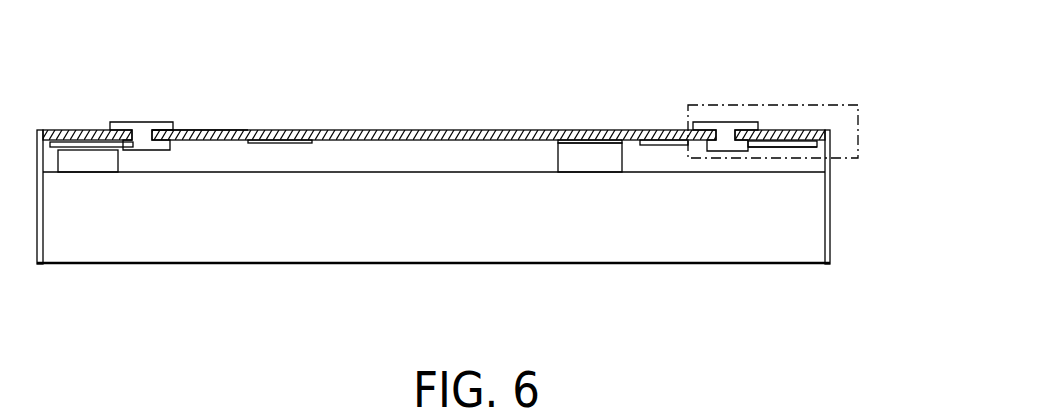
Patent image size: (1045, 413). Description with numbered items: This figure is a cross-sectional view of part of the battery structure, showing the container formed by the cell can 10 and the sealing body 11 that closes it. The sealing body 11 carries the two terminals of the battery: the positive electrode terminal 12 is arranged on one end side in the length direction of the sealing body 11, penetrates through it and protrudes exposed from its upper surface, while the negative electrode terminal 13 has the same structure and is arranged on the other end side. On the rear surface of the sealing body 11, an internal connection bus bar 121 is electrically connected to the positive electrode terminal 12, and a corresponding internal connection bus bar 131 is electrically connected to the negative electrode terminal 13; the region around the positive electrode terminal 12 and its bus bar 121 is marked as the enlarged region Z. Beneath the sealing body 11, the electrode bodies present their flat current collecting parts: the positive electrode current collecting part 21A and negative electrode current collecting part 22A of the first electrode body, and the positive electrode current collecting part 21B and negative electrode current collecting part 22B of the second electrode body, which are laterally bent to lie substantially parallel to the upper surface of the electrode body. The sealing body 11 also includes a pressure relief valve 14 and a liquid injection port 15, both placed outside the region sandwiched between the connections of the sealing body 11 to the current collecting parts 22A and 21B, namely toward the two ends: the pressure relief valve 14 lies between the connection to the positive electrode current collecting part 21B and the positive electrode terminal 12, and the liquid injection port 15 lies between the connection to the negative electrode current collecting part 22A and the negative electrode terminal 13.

The cell can 10 is at (830, 250).
The sealing body 11 is at (415, 130).
The positive electrode terminal 12 is at (725, 122).
The internal connection bus bar 121 is at (772, 141).
The negative electrode terminal 13 is at (143, 122).
The internal connection bus bar 131 is at (85, 142).
The pressure relief valve 14 is at (650, 130).
The liquid injection port 15 is at (197, 130).
The positive electrode current collecting part 21A is at (788, 150).
The positive electrode current collecting part 21B is at (575, 150).
The negative electrode current collecting part 22A is at (293, 143).
The negative electrode current collecting part 22B is at (43, 162).
The enlarged region Z is at (835, 95).